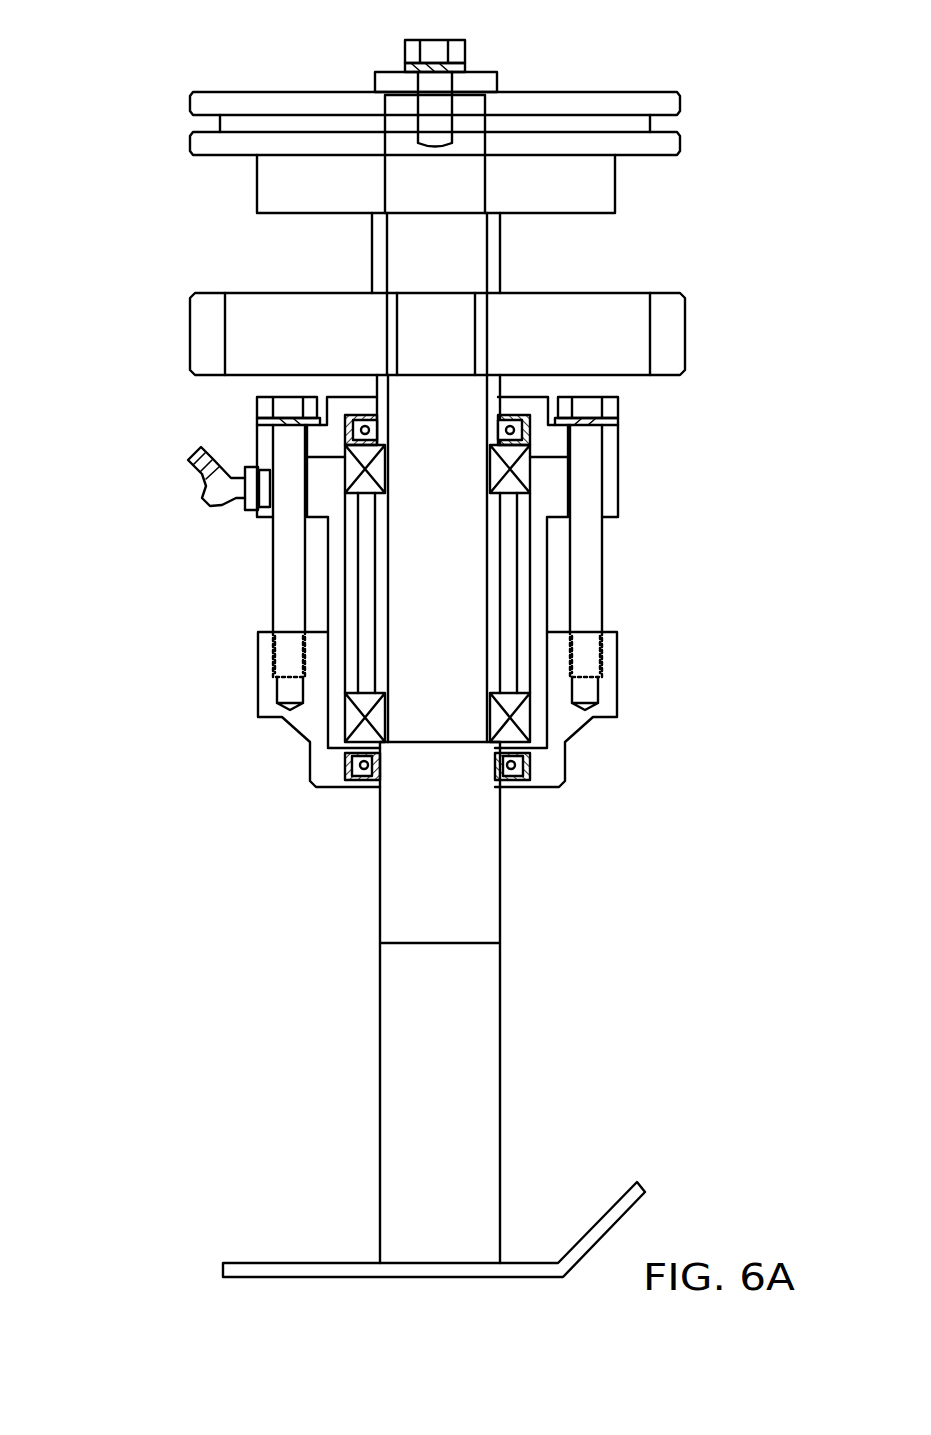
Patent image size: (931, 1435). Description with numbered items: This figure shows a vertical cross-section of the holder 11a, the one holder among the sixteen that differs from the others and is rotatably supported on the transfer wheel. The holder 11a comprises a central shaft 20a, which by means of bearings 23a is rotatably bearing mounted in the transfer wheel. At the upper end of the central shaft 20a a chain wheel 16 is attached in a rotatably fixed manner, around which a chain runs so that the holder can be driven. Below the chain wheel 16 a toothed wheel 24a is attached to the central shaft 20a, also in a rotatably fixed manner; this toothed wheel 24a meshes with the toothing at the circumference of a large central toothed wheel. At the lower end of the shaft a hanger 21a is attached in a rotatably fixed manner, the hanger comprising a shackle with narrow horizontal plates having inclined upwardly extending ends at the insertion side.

The chain wheel 16 is at (216, 103).
The toothed wheel 24a is at (200, 342).
The holder 11a is at (172, 503).
The bearings 23a is at (350, 718).
The central shaft 20a is at (398, 868).
The hanger 21a is at (293, 1110).